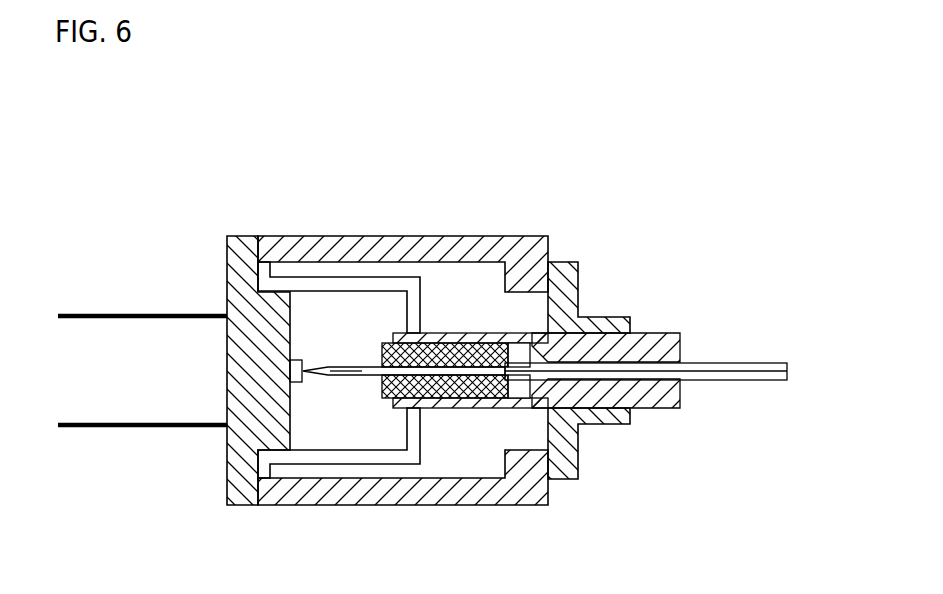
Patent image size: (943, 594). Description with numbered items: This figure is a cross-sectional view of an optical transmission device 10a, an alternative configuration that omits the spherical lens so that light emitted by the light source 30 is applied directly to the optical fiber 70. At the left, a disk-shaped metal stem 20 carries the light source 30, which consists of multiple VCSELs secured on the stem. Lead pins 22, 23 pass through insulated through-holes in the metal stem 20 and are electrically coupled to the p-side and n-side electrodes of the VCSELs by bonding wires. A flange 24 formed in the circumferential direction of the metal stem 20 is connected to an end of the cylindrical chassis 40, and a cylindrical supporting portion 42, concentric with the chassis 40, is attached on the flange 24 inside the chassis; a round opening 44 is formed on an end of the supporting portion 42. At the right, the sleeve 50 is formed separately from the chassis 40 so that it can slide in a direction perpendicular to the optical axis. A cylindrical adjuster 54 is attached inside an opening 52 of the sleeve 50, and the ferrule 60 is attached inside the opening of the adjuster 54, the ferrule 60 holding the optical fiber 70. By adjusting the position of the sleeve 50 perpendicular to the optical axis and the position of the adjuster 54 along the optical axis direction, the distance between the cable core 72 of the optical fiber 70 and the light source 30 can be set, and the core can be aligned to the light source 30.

The optical transmission device 10a is at (405, 159).
The metal stem 20 is at (232, 236).
The lead pin 22 is at (135, 315).
The lead pin 23 is at (130, 428).
The flange 24 is at (263, 262).
The light source 30 is at (297, 383).
The chassis 40 is at (527, 236).
The supporting portion 42 is at (325, 282).
The opening 44 is at (430, 332).
The sleeve 50 is at (580, 266).
The opening 52 is at (632, 333).
The adjuster 54 is at (680, 408).
The ferrule 60 is at (461, 402).
The optical fiber 70 is at (720, 362).
The cable core 72 is at (363, 376).